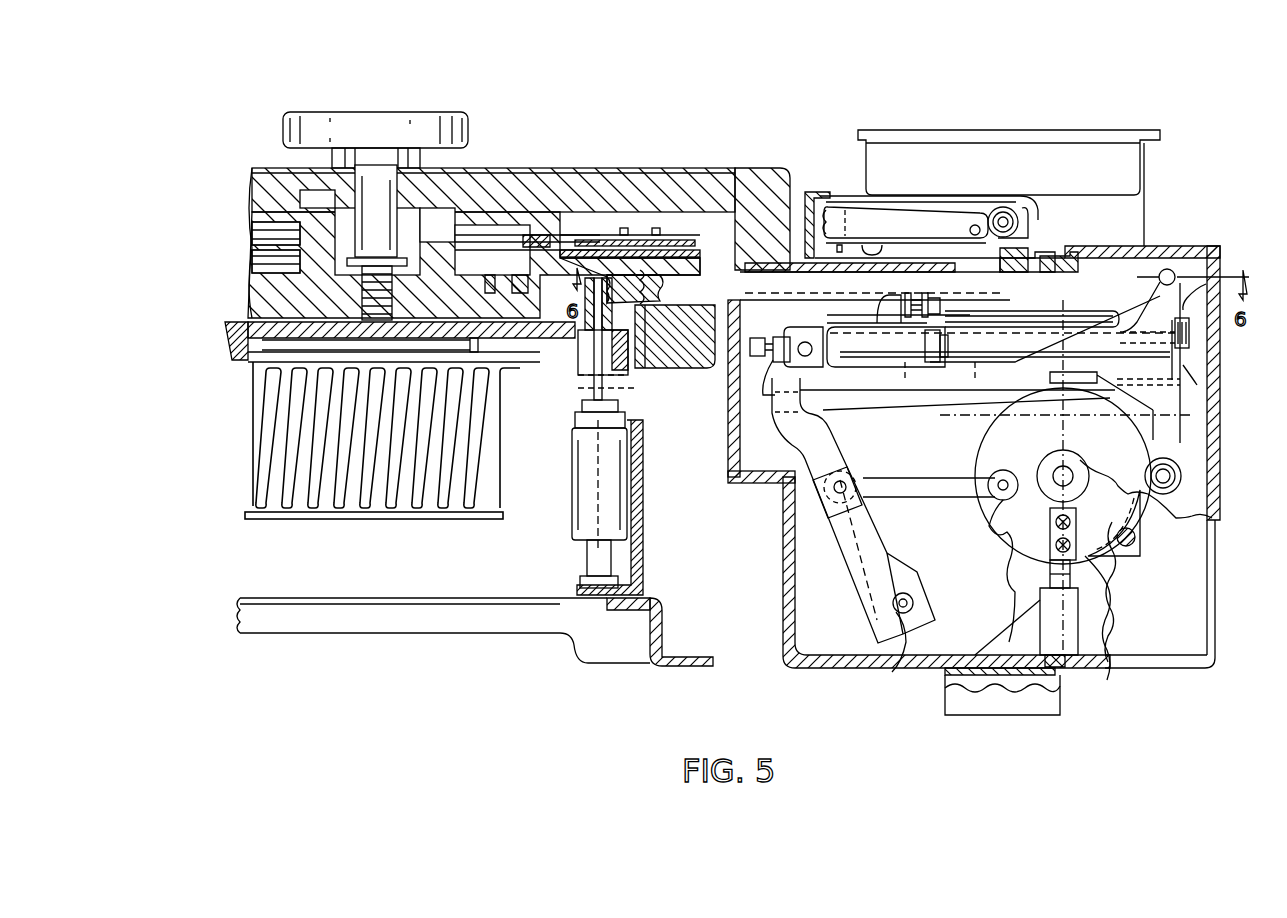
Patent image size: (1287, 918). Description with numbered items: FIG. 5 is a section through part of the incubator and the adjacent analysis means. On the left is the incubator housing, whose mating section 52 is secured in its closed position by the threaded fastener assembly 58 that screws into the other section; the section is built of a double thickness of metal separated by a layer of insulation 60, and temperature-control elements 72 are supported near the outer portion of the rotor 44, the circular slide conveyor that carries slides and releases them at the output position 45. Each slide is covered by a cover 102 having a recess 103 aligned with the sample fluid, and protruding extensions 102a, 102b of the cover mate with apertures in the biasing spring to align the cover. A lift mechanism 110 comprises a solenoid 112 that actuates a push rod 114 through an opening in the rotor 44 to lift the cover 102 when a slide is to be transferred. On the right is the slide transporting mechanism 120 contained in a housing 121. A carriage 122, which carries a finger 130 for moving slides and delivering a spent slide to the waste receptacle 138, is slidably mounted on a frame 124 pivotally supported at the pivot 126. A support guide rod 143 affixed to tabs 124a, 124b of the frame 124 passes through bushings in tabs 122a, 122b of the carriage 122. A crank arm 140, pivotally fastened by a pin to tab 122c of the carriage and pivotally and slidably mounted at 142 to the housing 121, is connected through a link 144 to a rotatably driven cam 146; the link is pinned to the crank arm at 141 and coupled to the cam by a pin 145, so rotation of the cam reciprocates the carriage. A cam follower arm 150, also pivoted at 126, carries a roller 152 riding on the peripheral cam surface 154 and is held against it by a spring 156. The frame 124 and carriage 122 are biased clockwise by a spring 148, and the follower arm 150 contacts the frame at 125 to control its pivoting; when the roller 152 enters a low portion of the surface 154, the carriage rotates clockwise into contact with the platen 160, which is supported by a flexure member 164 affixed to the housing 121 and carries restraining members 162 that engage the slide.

The rotor 44 is at (562, 175).
The output position 45 is at (655, 248).
The mating section 52 is at (521, 166).
The threaded fastener assembly 58 is at (408, 117).
The insulation 60 is at (476, 170).
The temperature-control elements 72 is at (256, 288).
The cover 102 is at (672, 245).
The protruding extension 102a is at (658, 240).
The protruding extension 102b is at (608, 238).
The recess 103 is at (636, 238).
The lift mechanism 110 is at (548, 508).
The solenoid 112 is at (574, 546).
The push rod 114 is at (592, 386).
The slide transporting mechanism 120 is at (1148, 198).
The housing 121 is at (1174, 630).
The carriage 122 is at (883, 315).
The tab 122a is at (778, 372).
The tab 122b is at (950, 345).
The tab 122c is at (800, 336).
The frame 124 is at (882, 406).
The tab 124a is at (765, 392).
The tab 124b is at (1198, 384).
The contact point 125 is at (954, 378).
The pivot 126 is at (1168, 268).
The finger 130 is at (730, 220).
The waste receptacle 138 is at (1066, 682).
The crank arm 140 is at (790, 444).
The pivot pin 141 is at (838, 496).
The pivotal and sliding mount 142 is at (908, 640).
The support guide rod 143 is at (906, 365).
The link 144 is at (912, 490).
The pin 145 is at (1012, 505).
The cam 146 is at (1034, 554).
The spring 148 is at (1196, 360).
The cam follower arm 150 is at (1170, 440).
The roller 152 is at (1185, 478).
The peripheral cam surface 154 is at (1180, 532).
The spring 156 is at (1186, 298).
The platen 160 is at (935, 250).
The restraining members 162 is at (860, 245).
The flexure member 164 is at (880, 247).